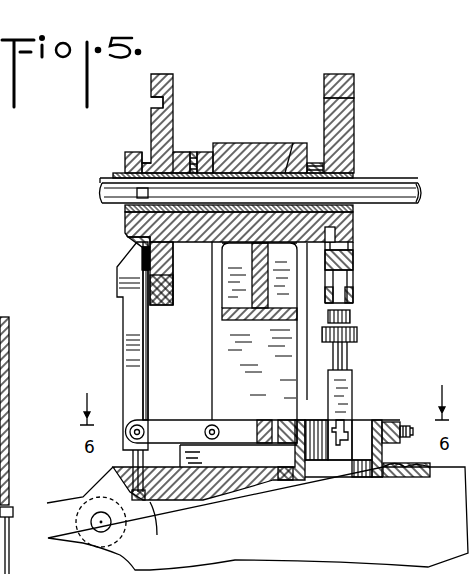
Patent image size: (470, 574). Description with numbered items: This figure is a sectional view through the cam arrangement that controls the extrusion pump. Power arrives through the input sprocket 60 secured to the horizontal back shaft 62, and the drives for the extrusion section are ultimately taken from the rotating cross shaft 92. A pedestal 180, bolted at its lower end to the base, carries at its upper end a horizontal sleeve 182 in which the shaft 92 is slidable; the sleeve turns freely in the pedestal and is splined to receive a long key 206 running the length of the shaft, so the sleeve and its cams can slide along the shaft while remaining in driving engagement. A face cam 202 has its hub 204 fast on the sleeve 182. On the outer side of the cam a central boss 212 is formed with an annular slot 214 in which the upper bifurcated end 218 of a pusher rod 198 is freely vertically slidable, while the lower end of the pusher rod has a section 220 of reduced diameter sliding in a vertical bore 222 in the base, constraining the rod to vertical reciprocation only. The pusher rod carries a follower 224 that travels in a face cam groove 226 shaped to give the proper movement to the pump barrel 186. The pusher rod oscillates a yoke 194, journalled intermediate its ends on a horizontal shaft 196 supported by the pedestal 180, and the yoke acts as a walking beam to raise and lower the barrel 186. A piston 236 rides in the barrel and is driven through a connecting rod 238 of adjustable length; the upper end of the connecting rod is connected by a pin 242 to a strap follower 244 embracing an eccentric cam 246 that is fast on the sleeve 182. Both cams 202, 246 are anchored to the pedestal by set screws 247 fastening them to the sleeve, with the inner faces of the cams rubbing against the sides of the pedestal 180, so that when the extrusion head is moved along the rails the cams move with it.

The input sprocket 60 is at (4, 480).
The back shaft 62 is at (8, 440).
The cross shaft 92 is at (413, 183).
The pedestal 180 is at (265, 143).
The sleeve 182 is at (296, 143).
The pump barrel 186 is at (300, 480).
The yoke 194 is at (279, 420).
The horizontal shaft 196 is at (214, 428).
The pusher rod 198 is at (135, 366).
The face cam 202 is at (173, 100).
The hub 204 is at (182, 237).
The key 206 is at (115, 175).
The central boss 212 is at (125, 156).
The annular slot 214 is at (142, 150).
The bifurcated end 218 is at (136, 237).
The reduced-diameter section 220 is at (147, 490).
The vertical bore 222 is at (150, 503).
The follower 224 is at (163, 305).
The face cam groove 226 is at (152, 96).
The piston 236 is at (370, 455).
The connecting rod 238 is at (348, 372).
The pin 242 is at (355, 249).
The strap follower 244 is at (355, 80).
The eccentric cam 246 is at (355, 113).
The set screws 247 is at (193, 162).